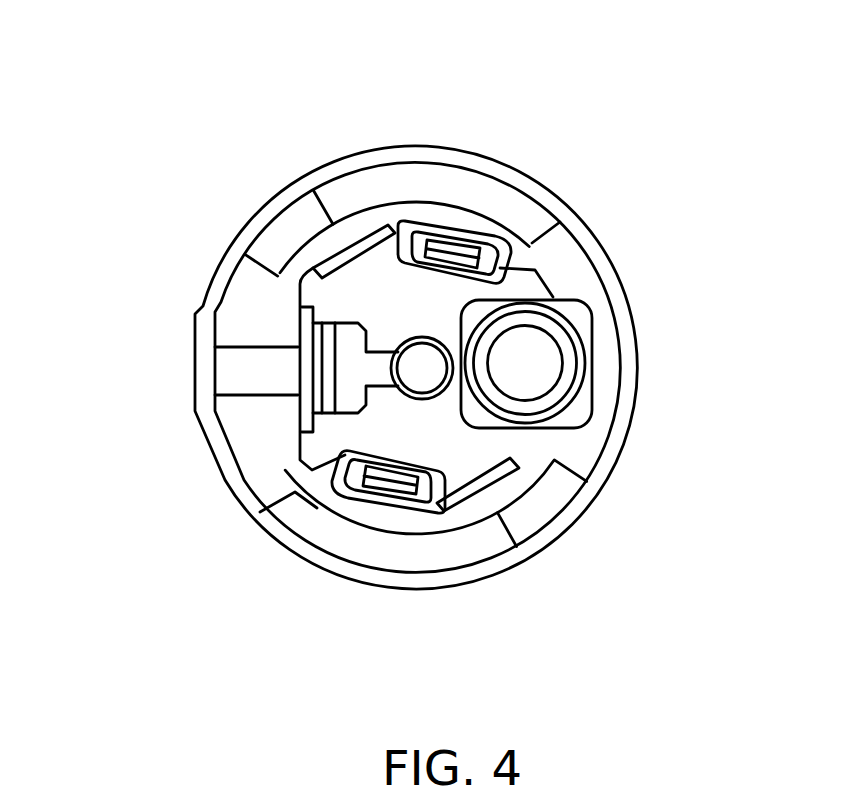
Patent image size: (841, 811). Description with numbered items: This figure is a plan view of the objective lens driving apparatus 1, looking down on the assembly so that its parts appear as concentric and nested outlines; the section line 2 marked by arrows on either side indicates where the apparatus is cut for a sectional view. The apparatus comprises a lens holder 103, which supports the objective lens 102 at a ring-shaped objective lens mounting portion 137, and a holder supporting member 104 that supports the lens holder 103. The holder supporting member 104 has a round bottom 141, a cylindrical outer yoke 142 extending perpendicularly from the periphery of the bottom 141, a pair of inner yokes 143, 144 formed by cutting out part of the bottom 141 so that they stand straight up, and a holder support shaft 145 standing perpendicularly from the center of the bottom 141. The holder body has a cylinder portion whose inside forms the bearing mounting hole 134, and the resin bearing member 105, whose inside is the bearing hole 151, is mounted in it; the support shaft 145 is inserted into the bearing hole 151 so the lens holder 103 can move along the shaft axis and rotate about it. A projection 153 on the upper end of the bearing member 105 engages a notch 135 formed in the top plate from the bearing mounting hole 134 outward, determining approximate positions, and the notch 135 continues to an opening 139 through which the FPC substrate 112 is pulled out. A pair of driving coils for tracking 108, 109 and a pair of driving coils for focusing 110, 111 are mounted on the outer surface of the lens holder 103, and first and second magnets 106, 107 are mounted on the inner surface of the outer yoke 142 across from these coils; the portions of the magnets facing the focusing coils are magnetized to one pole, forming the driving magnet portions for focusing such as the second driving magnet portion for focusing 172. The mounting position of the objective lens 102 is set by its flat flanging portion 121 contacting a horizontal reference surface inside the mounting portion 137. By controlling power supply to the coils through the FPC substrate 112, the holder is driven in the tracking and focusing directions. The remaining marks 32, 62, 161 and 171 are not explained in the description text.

The lamp socket assembly 1 is at (562, 125).
The section line 2 is at (187, 368).
The aperture 32 is at (432, 313).
The arcuate segment 62 is at (380, 141).
The objective lens 102 is at (553, 365).
The lens holder 103 is at (598, 283).
The holder supporting member 104 is at (523, 230).
The bearing member 105 is at (367, 332).
The first magnet 106 is at (378, 192).
The second magnet 107 is at (448, 547).
The driving coil for tracking 108 is at (332, 250).
The driving coil for tracking 109 is at (555, 460).
The driving coil for focusing 110 is at (520, 262).
The driving coil for focusing 111 is at (288, 514).
The FPC substrate 112 is at (255, 383).
The flat flanging portion 121 is at (562, 388).
The bearing mounting hole 134 is at (298, 472).
The notch 135 is at (380, 392).
The objective lens mounting portion 137 is at (535, 430).
The opening 139 is at (305, 430).
The bottom 141 is at (580, 290).
The outer yoke 142 is at (597, 298).
The inner yoke 143 is at (460, 248).
The inner yoke 144 is at (340, 478).
The holder support shaft 145 is at (412, 384).
The bearing hole 151 is at (413, 337).
The projection 153 is at (413, 373).
The arcuate segment 161 is at (348, 145).
The arcuate segment 171 is at (452, 598).
The second driving magnet portion for focusing 172 is at (260, 536).